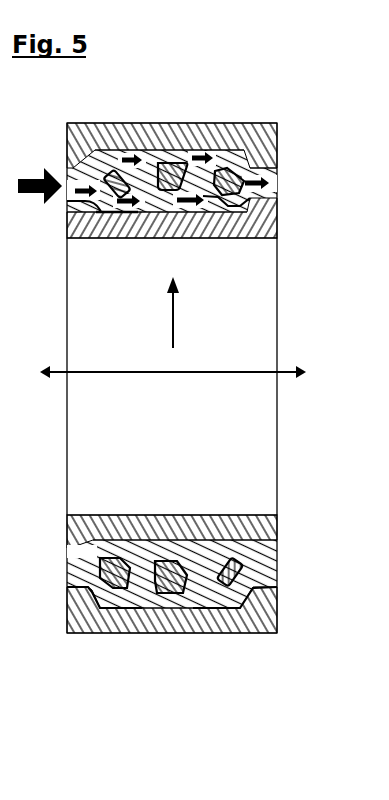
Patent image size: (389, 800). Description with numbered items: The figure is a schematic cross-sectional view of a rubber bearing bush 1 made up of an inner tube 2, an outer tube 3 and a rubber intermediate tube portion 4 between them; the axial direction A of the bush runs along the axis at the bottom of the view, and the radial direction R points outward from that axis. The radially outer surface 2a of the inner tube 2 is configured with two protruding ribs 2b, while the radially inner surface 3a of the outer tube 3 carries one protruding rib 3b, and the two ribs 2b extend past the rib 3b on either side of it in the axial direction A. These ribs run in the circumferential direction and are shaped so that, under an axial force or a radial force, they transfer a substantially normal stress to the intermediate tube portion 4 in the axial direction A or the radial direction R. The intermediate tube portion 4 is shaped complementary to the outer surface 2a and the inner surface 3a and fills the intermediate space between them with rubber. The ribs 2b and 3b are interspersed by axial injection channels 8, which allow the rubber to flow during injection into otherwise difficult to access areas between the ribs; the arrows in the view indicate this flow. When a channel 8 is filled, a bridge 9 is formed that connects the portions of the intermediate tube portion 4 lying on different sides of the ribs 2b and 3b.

The bearing bush 1 is at (52, 117).
The inner tube 2 is at (278, 216).
The radially outer surface of the inner tube 2a is at (193, 543).
The protruding ribs of the inner tube 2b is at (117, 180).
The outer tube 3 is at (241, 140).
The radially inner surface of the outer tube 3a is at (142, 608).
The protruding rib of the outer tube 3b is at (190, 143).
The intermediate tube portion 4 is at (278, 196).
The axial injection channels 8 is at (176, 145).
The bridge 9 is at (173, 153).
The radial direction R is at (173, 333).
The axial direction A is at (276, 371).